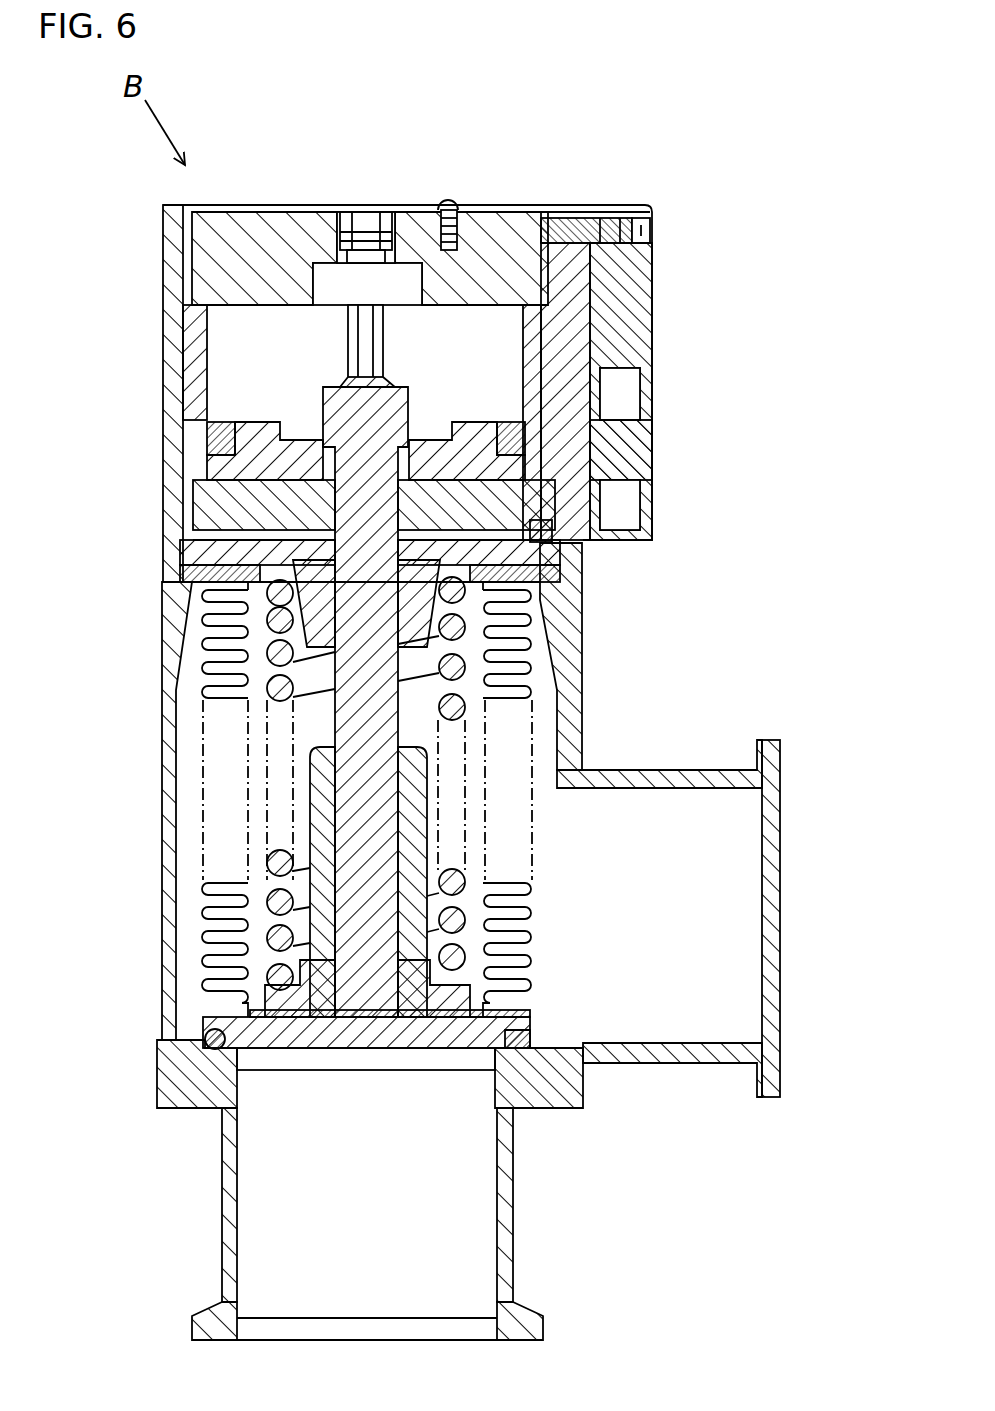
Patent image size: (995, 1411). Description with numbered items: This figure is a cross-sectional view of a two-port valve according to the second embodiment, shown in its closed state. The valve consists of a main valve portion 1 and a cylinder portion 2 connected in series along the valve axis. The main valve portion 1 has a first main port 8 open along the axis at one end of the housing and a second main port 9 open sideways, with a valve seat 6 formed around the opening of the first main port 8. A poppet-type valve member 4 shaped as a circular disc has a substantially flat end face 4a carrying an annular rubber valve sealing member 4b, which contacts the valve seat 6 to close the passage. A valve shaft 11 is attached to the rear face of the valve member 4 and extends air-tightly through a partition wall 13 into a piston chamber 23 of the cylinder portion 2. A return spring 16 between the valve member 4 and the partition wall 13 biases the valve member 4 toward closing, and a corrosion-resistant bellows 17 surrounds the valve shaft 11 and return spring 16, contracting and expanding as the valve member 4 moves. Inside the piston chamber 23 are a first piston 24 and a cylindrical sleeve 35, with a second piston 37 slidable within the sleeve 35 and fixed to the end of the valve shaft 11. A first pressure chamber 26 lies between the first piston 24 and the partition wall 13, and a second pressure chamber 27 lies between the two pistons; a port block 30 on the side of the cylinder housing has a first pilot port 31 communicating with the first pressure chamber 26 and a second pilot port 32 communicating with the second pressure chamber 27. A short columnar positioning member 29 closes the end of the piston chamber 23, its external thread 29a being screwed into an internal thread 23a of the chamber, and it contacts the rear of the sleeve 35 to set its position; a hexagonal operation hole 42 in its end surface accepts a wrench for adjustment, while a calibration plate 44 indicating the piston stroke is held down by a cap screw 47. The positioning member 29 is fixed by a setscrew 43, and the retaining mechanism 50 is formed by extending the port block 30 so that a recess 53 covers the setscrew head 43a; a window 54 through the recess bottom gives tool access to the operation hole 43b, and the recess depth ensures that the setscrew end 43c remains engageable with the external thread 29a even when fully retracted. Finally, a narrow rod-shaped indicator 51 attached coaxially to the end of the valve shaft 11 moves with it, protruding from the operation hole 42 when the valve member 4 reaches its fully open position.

The main valve portion 1 is at (150, 850).
The cylinder portion 2 is at (140, 295).
The valve member 4 is at (290, 1060).
The end face 4a is at (352, 1050).
The valve sealing member 4b is at (212, 1043).
The valve seat 6 is at (535, 1030).
The first main port 8 is at (420, 1310).
The second main port 9 is at (745, 912).
The valve shaft 11 is at (360, 808).
The partition wall 13 is at (222, 548).
The return spring 16 is at (215, 725).
The bellows 17 is at (532, 930).
The piston chamber 23 is at (175, 352).
The internal thread 23a is at (185, 320).
The first piston 24 is at (230, 492).
The first pressure chamber 26 is at (583, 568).
The second pressure chamber 27 is at (600, 460).
The positioning member 29 is at (278, 248).
The external thread 29a is at (525, 285).
The port block 30 is at (633, 330).
The first pilot port 31 is at (633, 515).
The second pilot port 32 is at (630, 402).
The sleeve 35 is at (210, 410).
The second piston 37 is at (222, 445).
The operation hole 42 is at (365, 222).
The setscrew 43 is at (575, 218).
The head 43a is at (612, 218).
The operation hole 43b is at (640, 214).
The end 43c is at (530, 215).
The calibration plate 44 is at (507, 215).
The cap screw 47 is at (445, 208).
The retaining mechanism 50 is at (662, 207).
The indicator 51 is at (362, 345).
The recess 53 is at (620, 272).
The window 54 is at (655, 243).